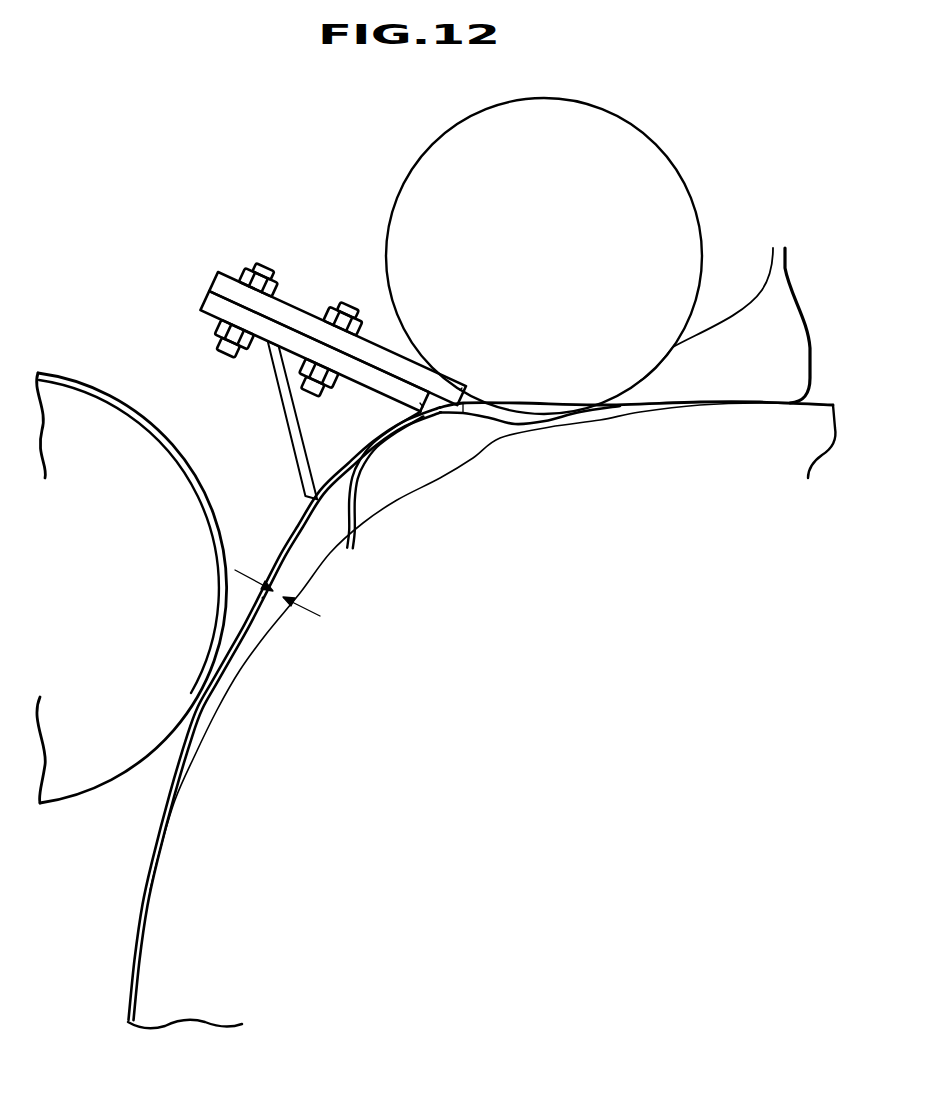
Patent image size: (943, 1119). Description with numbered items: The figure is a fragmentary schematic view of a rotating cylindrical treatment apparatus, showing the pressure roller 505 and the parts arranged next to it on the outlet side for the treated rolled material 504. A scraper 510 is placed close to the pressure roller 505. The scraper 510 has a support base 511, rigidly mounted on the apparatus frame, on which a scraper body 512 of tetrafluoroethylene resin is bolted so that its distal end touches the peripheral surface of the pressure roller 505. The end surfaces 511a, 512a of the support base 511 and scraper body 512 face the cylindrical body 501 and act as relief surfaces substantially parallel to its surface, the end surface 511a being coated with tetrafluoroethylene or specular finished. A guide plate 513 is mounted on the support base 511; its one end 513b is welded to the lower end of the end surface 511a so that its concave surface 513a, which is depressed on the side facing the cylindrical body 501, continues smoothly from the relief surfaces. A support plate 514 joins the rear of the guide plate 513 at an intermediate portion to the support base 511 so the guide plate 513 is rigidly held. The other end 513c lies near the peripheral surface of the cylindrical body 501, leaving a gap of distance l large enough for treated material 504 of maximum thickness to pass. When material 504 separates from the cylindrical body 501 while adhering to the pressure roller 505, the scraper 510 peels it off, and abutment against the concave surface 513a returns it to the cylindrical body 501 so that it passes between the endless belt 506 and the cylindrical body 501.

The cylindrical body 501 is at (811, 423).
The treated rolled material 504 is at (742, 330).
The pressure roller 505 is at (666, 190).
The endless belt 506 is at (115, 398).
The scraper 510 is at (370, 357).
The support base 511 is at (372, 383).
The end surface of the support base 511a is at (420, 405).
The scraper body 512 is at (383, 352).
The end surface of the scraper body 512a is at (462, 389).
The guide plate 513 is at (287, 525).
The concave surface of the guide plate 513a is at (362, 492).
The one end of the guide plate 513b is at (417, 423).
The other end of the guide plate 513c is at (264, 596).
The support plate 514 is at (290, 424).
The distance of the gap l is at (288, 601).